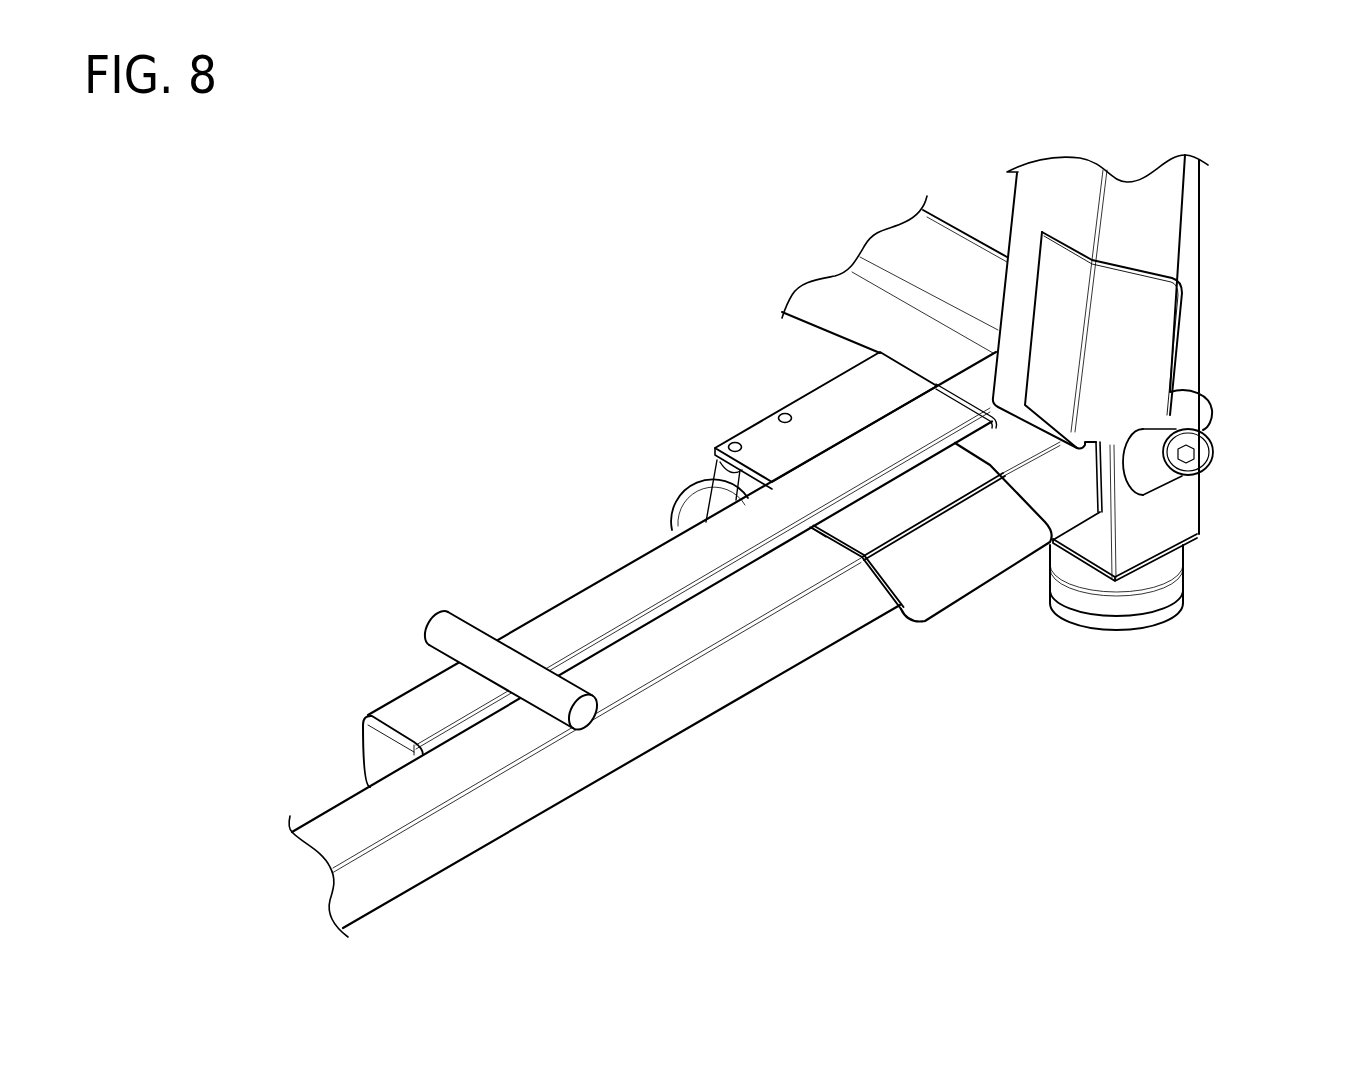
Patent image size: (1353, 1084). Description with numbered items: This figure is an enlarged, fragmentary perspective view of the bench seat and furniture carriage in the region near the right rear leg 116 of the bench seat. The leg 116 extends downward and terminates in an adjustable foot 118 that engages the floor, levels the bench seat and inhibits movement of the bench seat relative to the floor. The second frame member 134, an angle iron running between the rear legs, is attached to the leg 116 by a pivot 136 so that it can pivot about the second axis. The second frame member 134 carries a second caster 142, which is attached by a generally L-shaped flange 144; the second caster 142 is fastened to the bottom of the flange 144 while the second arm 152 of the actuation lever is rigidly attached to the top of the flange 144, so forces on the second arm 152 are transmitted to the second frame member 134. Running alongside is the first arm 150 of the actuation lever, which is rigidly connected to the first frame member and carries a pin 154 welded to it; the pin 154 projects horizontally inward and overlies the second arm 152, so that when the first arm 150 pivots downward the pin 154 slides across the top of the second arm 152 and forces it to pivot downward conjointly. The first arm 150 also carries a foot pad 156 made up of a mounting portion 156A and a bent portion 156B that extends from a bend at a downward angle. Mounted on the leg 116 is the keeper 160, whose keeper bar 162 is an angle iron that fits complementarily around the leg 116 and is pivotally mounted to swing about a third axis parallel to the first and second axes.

The leg 116 is at (1202, 220).
The foot 118 is at (1157, 615).
The second frame member 134 is at (905, 243).
The pivot 136 is at (1212, 455).
The second caster 142 is at (675, 525).
The flange 144 is at (820, 407).
The first arm 150 is at (553, 807).
The second arm 152 is at (547, 610).
The pin 154 is at (443, 623).
The foot pad 156 is at (909, 590).
The mounting portion 156A is at (853, 531).
The bent portion 156B is at (923, 598).
The keeper 160 is at (1060, 186).
The keeper bar 162 is at (1040, 206).